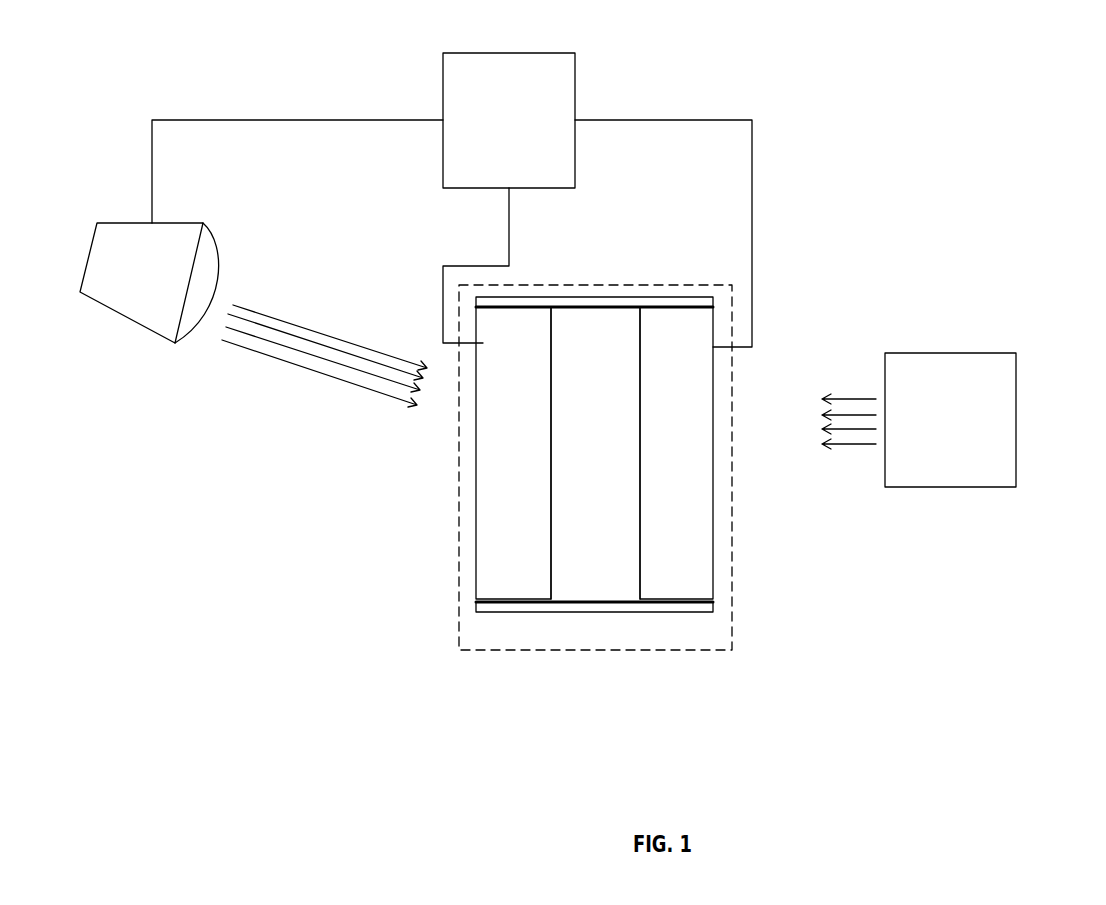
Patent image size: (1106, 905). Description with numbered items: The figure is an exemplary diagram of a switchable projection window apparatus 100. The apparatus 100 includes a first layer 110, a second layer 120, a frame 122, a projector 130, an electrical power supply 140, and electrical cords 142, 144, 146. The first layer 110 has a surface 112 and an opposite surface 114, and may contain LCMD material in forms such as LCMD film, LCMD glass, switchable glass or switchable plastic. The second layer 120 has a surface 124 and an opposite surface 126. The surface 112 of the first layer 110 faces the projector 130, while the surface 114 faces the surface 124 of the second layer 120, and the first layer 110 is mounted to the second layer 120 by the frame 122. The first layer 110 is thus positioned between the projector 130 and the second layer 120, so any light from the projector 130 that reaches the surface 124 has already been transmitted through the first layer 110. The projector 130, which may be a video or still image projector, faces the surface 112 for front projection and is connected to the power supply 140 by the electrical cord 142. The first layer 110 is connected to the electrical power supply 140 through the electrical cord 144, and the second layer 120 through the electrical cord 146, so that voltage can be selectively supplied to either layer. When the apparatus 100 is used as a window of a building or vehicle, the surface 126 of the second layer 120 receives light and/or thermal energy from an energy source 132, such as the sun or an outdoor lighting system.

The switchable projection window apparatus 100 is at (912, 110).
The first layer 110 is at (519, 487).
The surface 112 is at (477, 503).
The opposite surface 114 is at (552, 524).
The second layer 120 is at (581, 464).
The frame 122 is at (630, 298).
The surface 124 is at (640, 404).
The opposite surface 126 is at (714, 453).
The projector 130 is at (210, 233).
The energy source 132 is at (970, 349).
The electrical power supply 140 is at (575, 87).
The electrical cord 142 is at (252, 120).
The electrical cord 144 is at (509, 232).
The electrical cord 146 is at (752, 173).